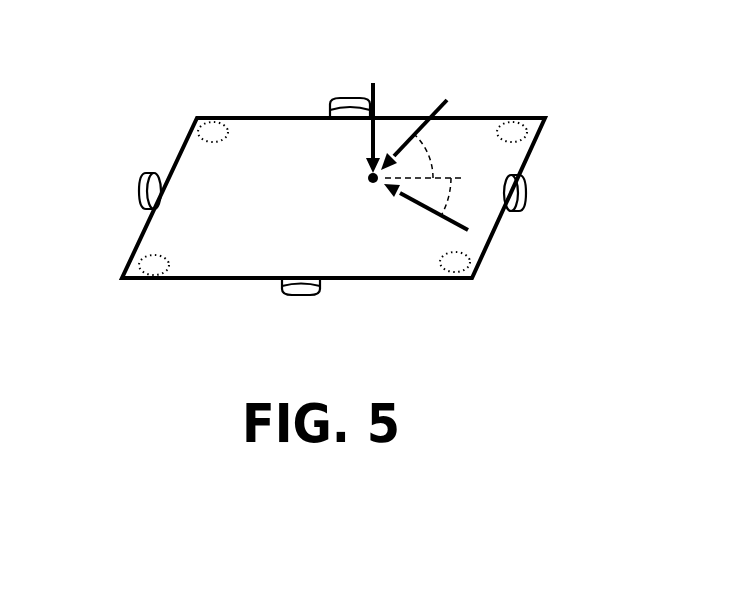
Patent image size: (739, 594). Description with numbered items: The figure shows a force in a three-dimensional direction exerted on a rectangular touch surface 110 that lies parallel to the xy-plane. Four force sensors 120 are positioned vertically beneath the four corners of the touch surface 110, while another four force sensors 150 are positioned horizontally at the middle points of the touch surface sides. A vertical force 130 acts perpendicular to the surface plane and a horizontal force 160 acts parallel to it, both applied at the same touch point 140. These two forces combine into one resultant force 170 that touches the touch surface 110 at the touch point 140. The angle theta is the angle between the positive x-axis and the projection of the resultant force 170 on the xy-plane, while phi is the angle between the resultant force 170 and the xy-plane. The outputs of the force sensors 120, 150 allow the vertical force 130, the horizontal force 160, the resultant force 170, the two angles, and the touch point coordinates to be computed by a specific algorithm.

The touch surface 110 is at (197, 160).
The force sensors 120 is at (210, 118).
The vertical force 130 is at (378, 92).
The touch point 140 is at (368, 177).
The force sensors 150 is at (332, 103).
The horizontal force 160 is at (420, 216).
The resultant force 170 is at (448, 103).